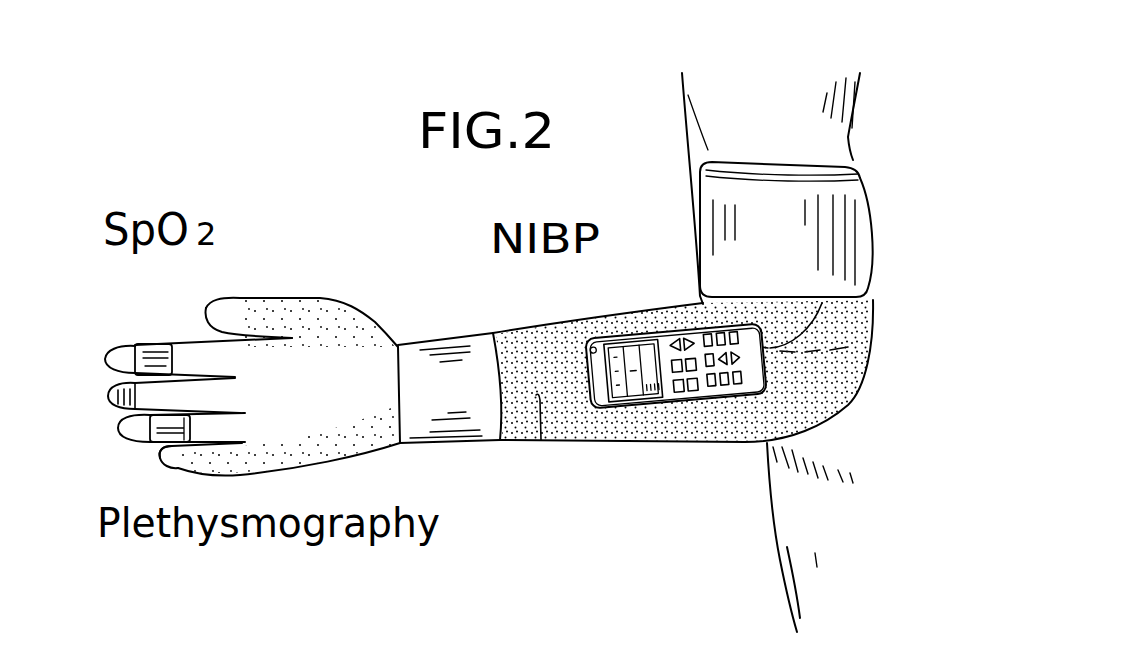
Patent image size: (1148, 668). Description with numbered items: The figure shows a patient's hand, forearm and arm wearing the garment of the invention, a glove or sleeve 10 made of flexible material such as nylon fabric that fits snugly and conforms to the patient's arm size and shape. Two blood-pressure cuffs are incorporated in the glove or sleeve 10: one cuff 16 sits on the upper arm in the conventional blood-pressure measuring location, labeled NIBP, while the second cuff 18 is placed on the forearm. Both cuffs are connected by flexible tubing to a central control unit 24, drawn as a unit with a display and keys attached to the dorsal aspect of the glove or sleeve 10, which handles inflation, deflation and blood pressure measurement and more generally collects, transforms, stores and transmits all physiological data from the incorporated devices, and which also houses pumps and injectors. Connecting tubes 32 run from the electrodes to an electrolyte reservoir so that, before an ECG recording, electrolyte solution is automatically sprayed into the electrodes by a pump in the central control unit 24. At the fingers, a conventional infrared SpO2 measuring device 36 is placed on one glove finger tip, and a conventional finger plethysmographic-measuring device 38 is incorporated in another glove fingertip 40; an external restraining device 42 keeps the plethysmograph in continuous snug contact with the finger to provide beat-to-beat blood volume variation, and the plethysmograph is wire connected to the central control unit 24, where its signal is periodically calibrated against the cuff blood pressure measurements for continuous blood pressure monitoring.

The glove or sleeve 10 is at (830, 422).
The blood-pressure cuff 16 is at (664, 237).
The blood-pressure cuff 18 is at (530, 260).
The central control unit 24 is at (637, 408).
The connecting tubes 32 is at (880, 334).
The IR SpO2 measuring device 36 is at (155, 322).
The finger plethysmographic-measuring device 38 is at (170, 470).
The glove fingertip 40 is at (112, 414).
The external restraining device 42 is at (192, 446).